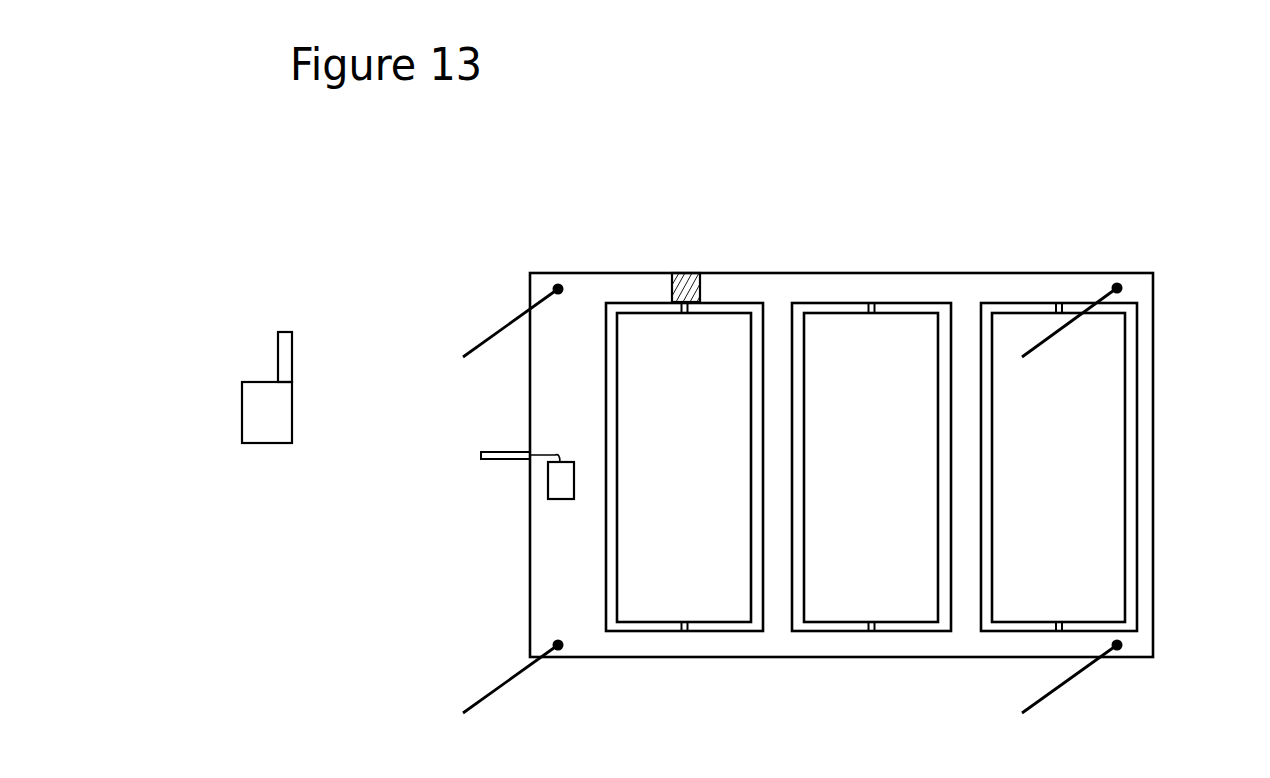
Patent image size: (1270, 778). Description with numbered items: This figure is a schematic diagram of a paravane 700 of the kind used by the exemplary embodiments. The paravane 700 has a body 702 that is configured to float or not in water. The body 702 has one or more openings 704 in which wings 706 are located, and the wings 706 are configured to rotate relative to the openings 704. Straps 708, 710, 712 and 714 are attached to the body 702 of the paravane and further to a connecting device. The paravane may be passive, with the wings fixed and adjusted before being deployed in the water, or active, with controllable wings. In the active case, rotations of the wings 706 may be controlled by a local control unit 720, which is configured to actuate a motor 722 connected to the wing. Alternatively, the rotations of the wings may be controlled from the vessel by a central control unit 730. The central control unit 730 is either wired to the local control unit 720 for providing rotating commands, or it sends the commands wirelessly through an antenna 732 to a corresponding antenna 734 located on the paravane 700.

The paravane 700 is at (828, 110).
The body 702 is at (993, 292).
The openings 704 is at (635, 625).
The wings 706 is at (710, 593).
The strap 708 is at (497, 330).
The strap 710 is at (507, 682).
The strap 712 is at (1055, 690).
The strap 714 is at (1045, 340).
The local control unit 720 is at (560, 483).
The motor 722 is at (688, 300).
The central control unit 730 is at (242, 413).
The antenna 732 is at (292, 353).
The antenna 734 is at (500, 452).